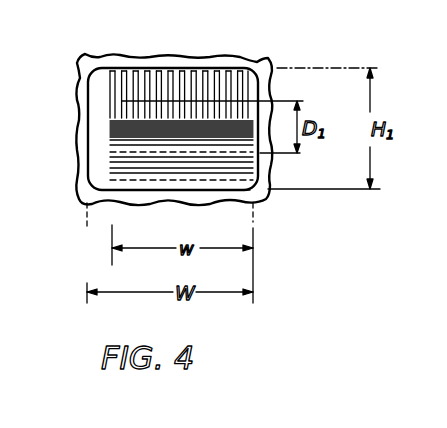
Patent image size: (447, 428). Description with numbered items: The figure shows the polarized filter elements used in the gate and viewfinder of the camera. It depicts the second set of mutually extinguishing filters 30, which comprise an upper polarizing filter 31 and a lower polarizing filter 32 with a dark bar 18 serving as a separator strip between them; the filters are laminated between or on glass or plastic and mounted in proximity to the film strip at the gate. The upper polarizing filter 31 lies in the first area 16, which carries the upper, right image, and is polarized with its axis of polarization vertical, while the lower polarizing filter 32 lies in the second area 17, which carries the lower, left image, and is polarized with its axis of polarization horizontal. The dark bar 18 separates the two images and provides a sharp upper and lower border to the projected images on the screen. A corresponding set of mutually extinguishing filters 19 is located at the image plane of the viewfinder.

The first area 16 is at (260, 67).
The second area 17 is at (256, 178).
The dark bar 18 is at (120, 127).
The mutually extinguishing filters 19 is at (122, 100).
The second set of mutually extinguishing filters 30 is at (238, 88).
The upper polarizing filter 31 is at (243, 64).
The lower polarizing filter 32 is at (153, 186).